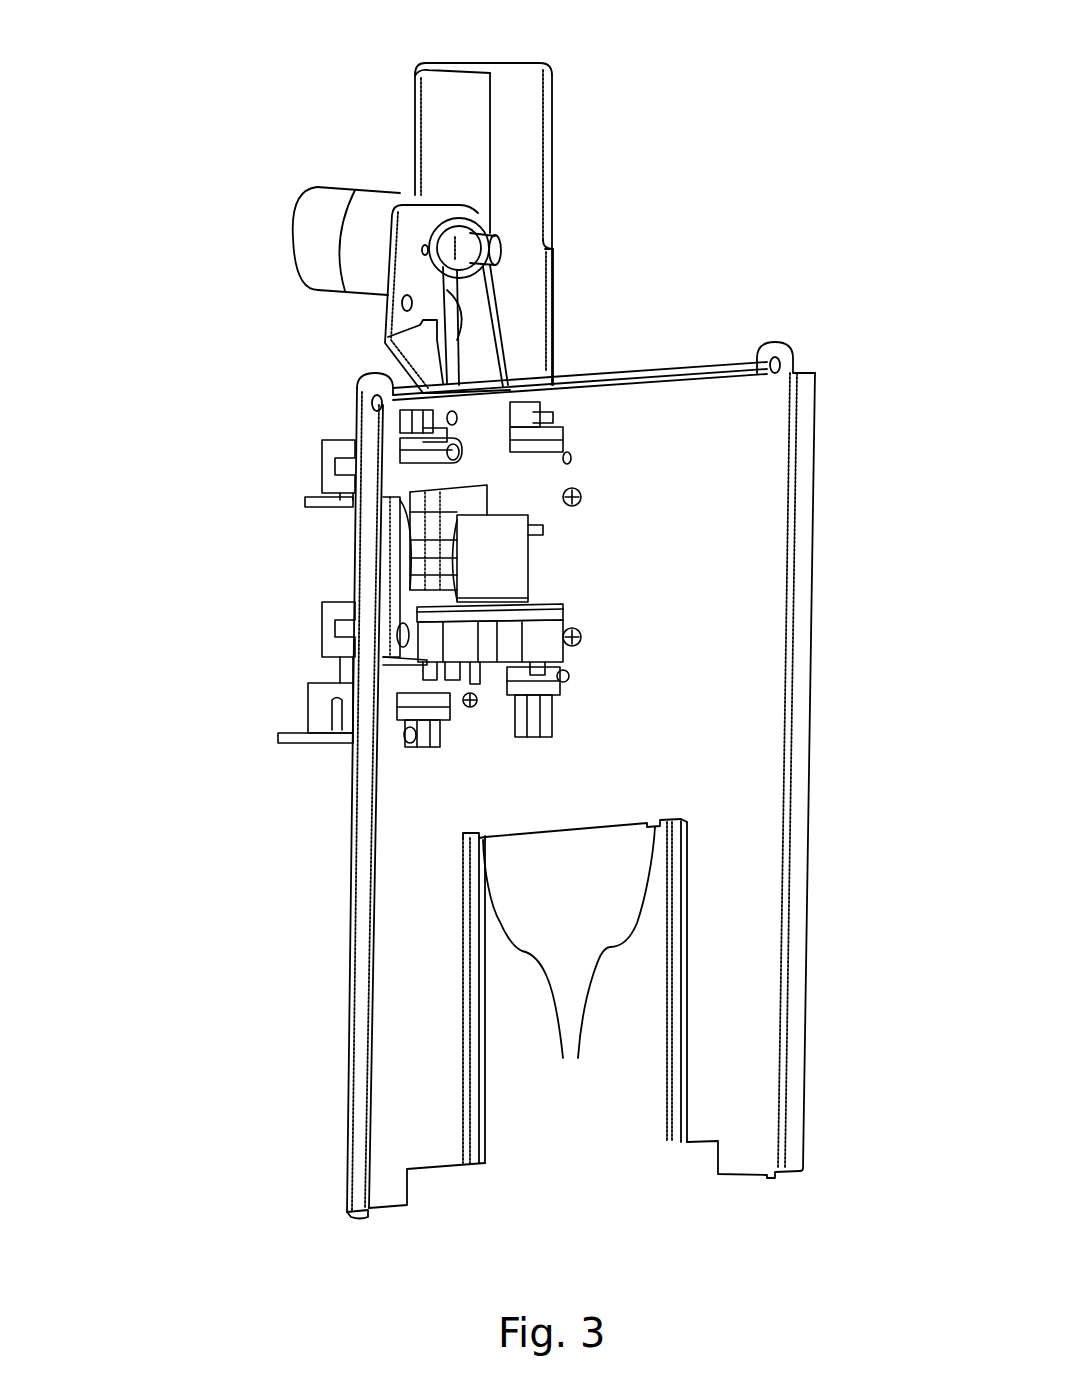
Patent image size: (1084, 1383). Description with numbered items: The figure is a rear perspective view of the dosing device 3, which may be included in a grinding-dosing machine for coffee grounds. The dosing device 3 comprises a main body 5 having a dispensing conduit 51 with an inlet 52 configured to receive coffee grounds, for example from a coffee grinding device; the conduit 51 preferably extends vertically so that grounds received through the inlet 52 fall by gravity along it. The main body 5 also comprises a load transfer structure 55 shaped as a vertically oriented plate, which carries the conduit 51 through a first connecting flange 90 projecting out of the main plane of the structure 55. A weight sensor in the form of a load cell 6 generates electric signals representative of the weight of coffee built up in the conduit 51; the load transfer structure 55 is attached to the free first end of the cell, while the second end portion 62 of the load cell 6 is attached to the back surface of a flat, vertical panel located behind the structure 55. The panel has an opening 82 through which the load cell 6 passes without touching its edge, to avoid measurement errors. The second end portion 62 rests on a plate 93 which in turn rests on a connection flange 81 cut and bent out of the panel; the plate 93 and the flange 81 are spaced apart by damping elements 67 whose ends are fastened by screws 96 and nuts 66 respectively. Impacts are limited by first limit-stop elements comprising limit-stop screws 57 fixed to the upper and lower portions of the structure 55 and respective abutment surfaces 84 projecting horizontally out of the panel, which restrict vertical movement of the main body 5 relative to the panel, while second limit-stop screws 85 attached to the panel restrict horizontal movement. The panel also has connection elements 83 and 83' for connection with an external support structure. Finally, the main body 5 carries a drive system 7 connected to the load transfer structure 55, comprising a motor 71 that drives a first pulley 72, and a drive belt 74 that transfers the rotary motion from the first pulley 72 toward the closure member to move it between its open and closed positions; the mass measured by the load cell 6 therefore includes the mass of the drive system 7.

The dosing device 3 is at (704, 165).
The main body 5 is at (352, 156).
The load cell 6 is at (542, 528).
The drive system 7 is at (264, 282).
The dispensing conduit 51 is at (545, 300).
The inlet 52 is at (472, 72).
The load transfer structure 55 is at (397, 325).
The limit-stop screws 57 is at (405, 432).
The second end portion 62 is at (512, 550).
The nuts 66 is at (566, 681).
The damping elements 67 is at (540, 655).
The motor 71 is at (310, 217).
The first pulley 72 is at (478, 228).
The drive belt 74 is at (580, 388).
The connection flange 81 is at (355, 650).
The opening 82 is at (405, 500).
The connection element 83 is at (827, 308).
The connection element 83' is at (564, 1142).
The abutment surfaces 84 is at (452, 452).
The limit-stop screws 85 is at (582, 497).
The first connecting flange 90 is at (320, 738).
The plate 93 is at (565, 612).
The screws 96 is at (310, 705).